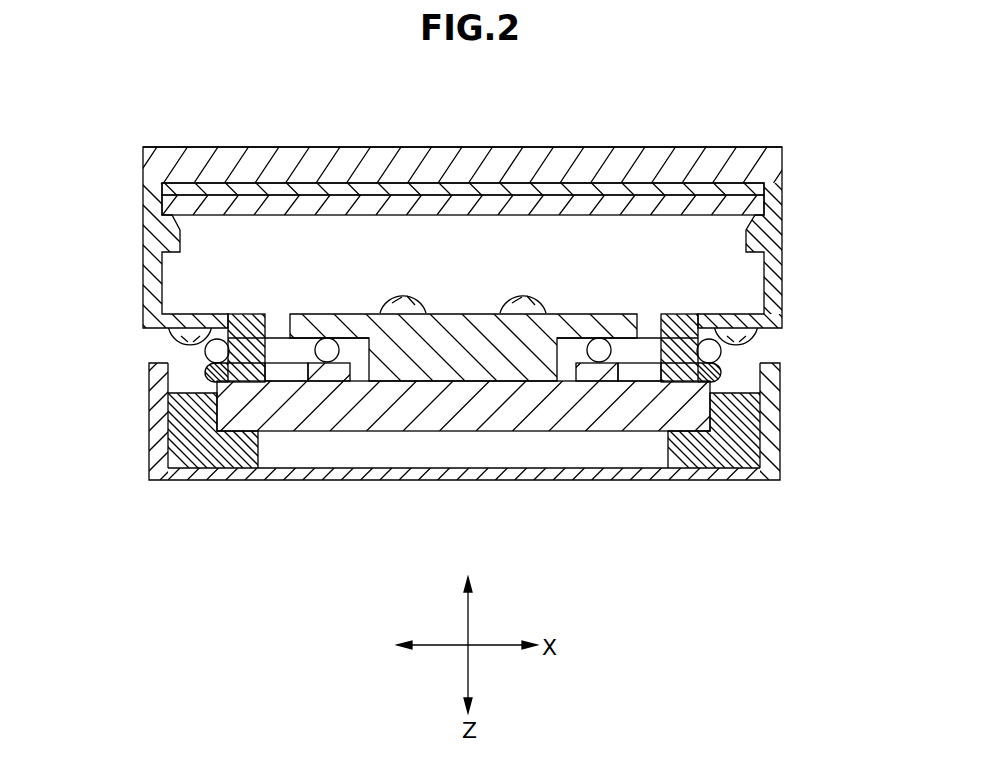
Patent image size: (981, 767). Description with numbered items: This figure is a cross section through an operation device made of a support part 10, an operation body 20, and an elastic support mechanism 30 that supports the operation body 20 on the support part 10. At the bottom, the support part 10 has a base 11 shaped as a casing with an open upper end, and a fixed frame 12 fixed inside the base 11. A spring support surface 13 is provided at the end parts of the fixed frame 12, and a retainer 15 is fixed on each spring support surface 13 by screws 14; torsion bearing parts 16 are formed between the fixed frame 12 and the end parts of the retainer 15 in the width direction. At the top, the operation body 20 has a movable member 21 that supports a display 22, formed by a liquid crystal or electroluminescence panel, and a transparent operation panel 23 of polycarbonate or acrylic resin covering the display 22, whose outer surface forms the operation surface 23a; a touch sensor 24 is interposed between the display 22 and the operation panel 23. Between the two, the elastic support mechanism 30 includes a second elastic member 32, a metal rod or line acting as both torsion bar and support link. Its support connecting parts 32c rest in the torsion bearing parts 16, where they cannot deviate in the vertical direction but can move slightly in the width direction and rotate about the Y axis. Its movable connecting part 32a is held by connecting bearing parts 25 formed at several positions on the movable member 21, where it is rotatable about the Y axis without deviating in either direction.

The support part 10 is at (808, 368).
The base 11 is at (216, 475).
The fixed frame 12 is at (447, 405).
The spring support surface 13 is at (288, 375).
The screw 14 is at (410, 295).
The retainer 15 is at (457, 322).
The torsion bearing part 16 is at (352, 373).
The operation body 20 is at (808, 147).
The movable member 21 is at (146, 260).
The display 22 is at (247, 205).
The operation panel 23 is at (388, 162).
The operation surface 23a is at (274, 147).
The touch sensor 24 is at (537, 188).
The connecting bearing part 25 is at (207, 373).
The elastic support mechanism 30 is at (808, 327).
The second elastic member 32 is at (273, 352).
The movable connecting part 32a is at (203, 347).
The support connecting part 32c is at (328, 338).